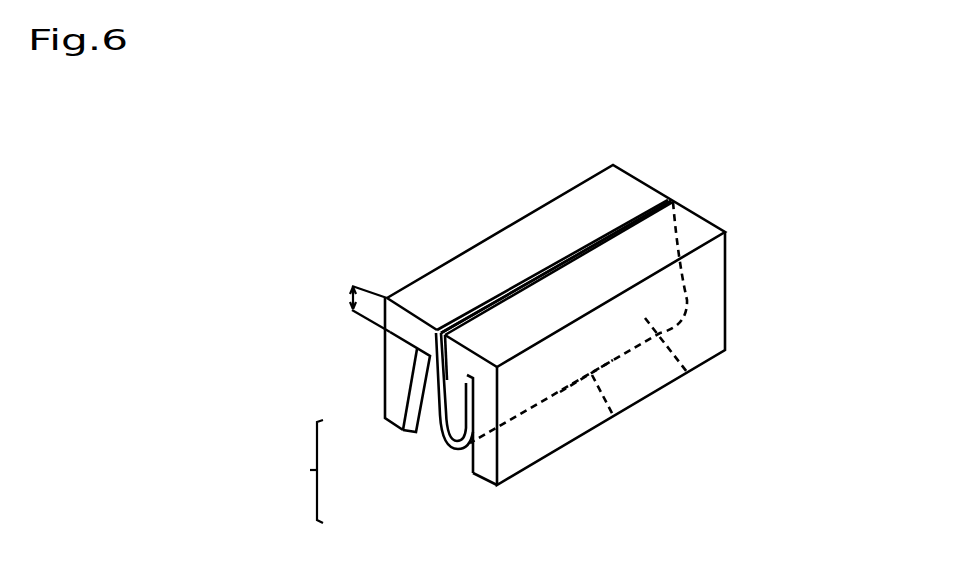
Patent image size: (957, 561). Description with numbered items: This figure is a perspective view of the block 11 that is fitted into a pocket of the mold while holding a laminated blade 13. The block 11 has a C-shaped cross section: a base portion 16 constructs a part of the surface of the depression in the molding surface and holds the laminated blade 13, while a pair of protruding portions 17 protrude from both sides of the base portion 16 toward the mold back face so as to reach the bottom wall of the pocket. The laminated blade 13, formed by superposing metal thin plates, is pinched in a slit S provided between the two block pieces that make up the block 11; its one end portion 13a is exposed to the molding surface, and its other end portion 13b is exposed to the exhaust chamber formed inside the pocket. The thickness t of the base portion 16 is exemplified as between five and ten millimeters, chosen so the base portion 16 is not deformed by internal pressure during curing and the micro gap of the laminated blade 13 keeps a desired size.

The block 11 is at (299, 471).
The laminated blade 13 is at (687, 372).
The one end portion 13a is at (543, 268).
The other end portion 13b is at (613, 415).
The base portion 16 is at (440, 412).
The protruding portions 17 is at (403, 428).
The slit S is at (680, 193).
The thickness t is at (359, 304).